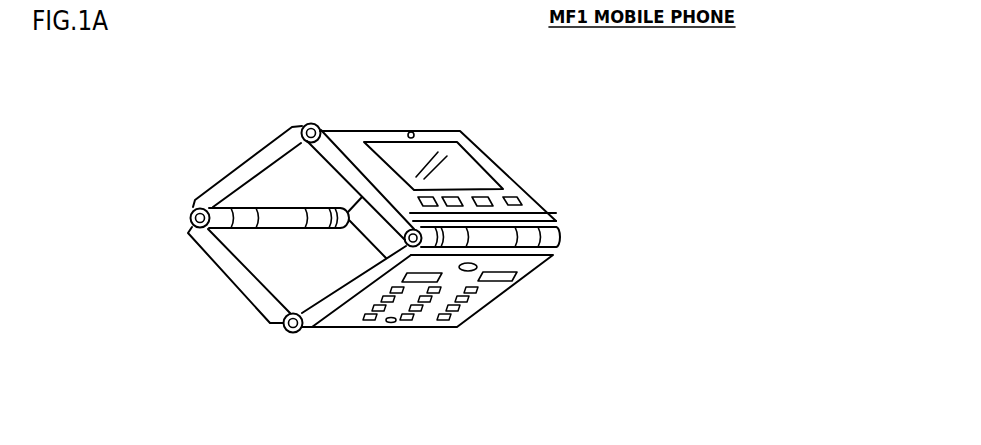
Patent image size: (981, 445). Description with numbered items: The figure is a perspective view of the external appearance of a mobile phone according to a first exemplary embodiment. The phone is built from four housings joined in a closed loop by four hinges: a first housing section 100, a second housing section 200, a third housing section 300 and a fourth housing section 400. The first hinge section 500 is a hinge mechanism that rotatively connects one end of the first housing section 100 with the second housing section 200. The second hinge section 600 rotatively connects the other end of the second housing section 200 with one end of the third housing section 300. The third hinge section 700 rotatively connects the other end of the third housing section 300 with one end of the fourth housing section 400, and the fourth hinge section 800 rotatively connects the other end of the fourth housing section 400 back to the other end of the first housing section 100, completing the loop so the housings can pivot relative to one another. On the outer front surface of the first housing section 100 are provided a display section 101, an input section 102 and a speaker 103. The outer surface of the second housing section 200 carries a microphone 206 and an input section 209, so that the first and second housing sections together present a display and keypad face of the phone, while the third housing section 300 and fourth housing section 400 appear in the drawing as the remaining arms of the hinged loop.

The first housing section 100 is at (538, 199).
The display section 101 is at (463, 162).
The input section 102 is at (490, 194).
The speaker 103 is at (418, 130).
The second housing section 200 is at (512, 284).
The microphone 206 is at (396, 323).
The input section 209 is at (478, 297).
The third housing section 300 is at (235, 274).
The fourth housing section 400 is at (247, 160).
The first hinge section 500 is at (561, 232).
The second hinge section 600 is at (293, 333).
The third hinge section 700 is at (190, 218).
The fourth hinge section 800 is at (310, 123).